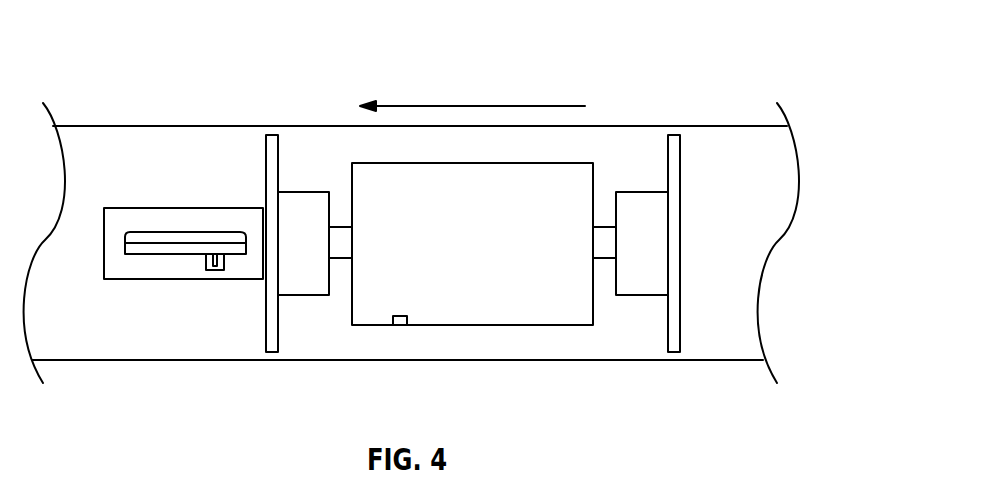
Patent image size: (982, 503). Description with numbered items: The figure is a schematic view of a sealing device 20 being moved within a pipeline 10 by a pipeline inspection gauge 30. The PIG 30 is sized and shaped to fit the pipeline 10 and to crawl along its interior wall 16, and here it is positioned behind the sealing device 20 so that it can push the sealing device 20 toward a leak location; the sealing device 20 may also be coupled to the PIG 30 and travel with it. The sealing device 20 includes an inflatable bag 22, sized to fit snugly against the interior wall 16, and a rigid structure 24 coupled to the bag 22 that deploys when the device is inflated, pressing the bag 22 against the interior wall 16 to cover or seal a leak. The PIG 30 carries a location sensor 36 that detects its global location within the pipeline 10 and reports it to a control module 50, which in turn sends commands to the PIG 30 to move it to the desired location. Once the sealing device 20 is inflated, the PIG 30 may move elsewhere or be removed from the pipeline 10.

The pipeline 10 is at (736, 32).
The interior wall 16 is at (240, 127).
The sealing device 20 is at (176, 234).
The bag 22 is at (121, 267).
The structure 24 is at (210, 243).
The pipeline inspection gauge 30 is at (568, 162).
The location sensor 36 is at (398, 327).
The control module 50 is at (216, 270).